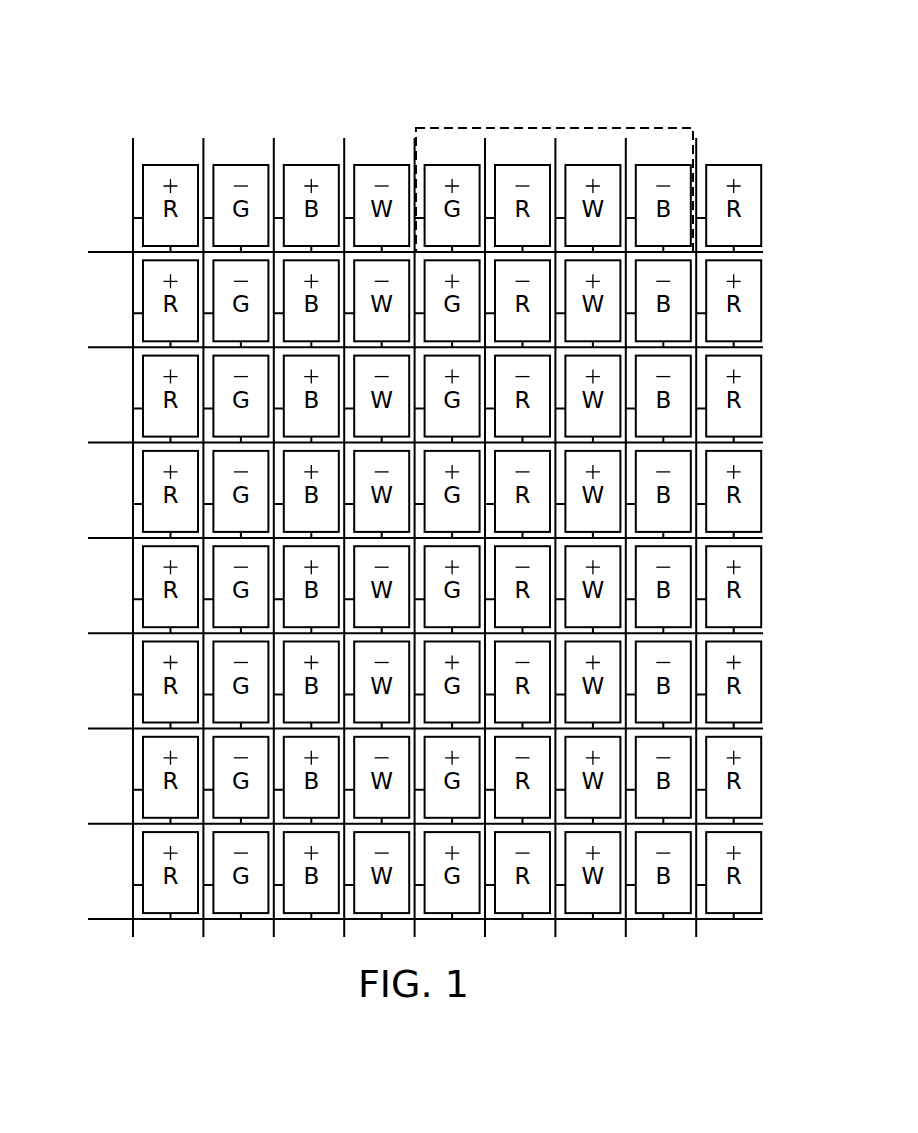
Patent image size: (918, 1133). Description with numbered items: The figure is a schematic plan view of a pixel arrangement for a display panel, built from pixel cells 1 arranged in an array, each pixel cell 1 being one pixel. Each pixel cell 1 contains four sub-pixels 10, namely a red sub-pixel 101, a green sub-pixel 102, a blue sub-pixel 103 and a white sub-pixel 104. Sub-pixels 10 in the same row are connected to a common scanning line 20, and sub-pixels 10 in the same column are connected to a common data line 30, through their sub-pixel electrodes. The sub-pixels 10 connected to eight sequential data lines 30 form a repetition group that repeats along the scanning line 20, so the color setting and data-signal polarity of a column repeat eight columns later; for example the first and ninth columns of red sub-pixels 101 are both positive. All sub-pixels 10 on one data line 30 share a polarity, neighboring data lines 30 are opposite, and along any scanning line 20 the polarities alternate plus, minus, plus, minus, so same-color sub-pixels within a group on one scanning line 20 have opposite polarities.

The pixel cell 1 is at (607, 128).
The sub-pixel 10 is at (171, 65).
The red sub-pixel 101 is at (162, 163).
The green sub-pixel 102 is at (236, 163).
The blue sub-pixel 103 is at (305, 170).
The white sub-pixel 104 is at (385, 163).
The scanning line 20 is at (110, 250).
The data line 30 is at (133, 163).